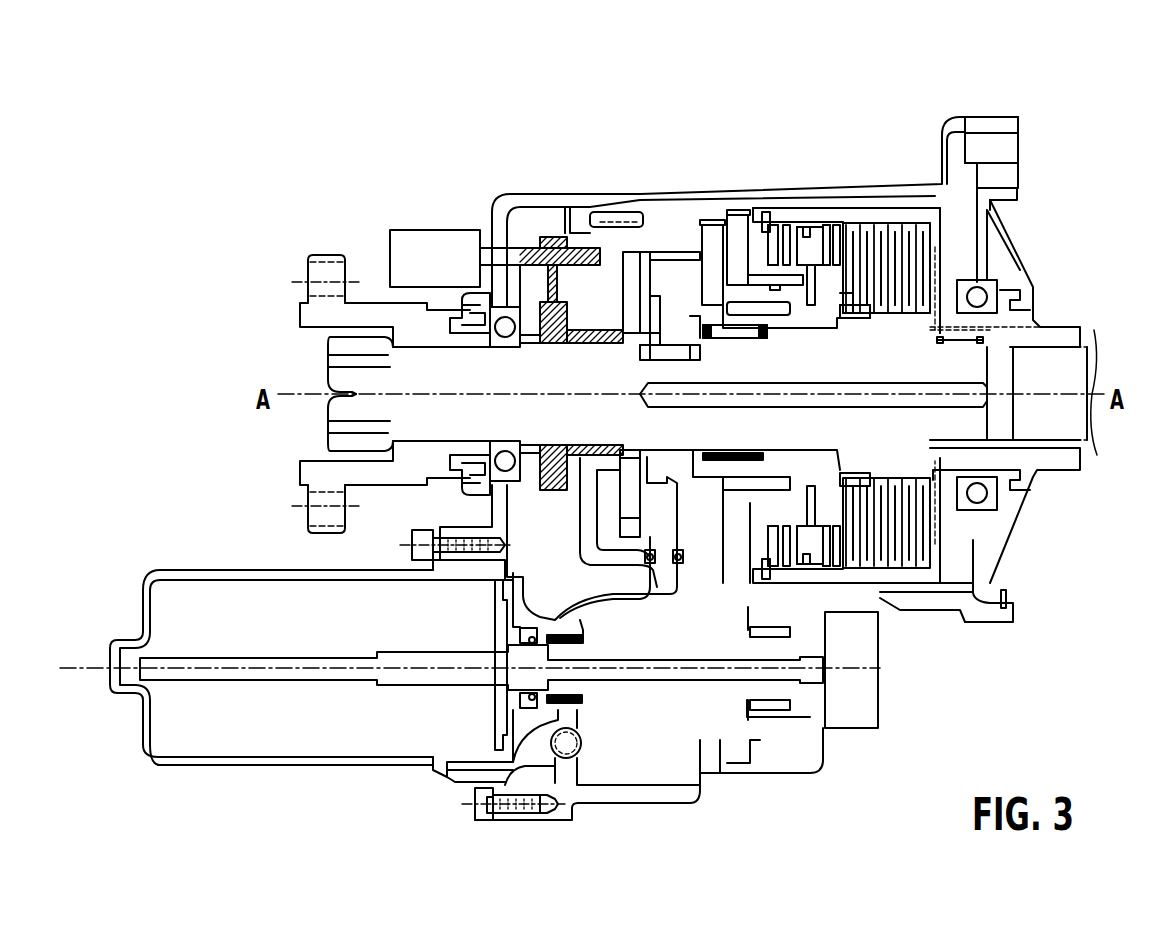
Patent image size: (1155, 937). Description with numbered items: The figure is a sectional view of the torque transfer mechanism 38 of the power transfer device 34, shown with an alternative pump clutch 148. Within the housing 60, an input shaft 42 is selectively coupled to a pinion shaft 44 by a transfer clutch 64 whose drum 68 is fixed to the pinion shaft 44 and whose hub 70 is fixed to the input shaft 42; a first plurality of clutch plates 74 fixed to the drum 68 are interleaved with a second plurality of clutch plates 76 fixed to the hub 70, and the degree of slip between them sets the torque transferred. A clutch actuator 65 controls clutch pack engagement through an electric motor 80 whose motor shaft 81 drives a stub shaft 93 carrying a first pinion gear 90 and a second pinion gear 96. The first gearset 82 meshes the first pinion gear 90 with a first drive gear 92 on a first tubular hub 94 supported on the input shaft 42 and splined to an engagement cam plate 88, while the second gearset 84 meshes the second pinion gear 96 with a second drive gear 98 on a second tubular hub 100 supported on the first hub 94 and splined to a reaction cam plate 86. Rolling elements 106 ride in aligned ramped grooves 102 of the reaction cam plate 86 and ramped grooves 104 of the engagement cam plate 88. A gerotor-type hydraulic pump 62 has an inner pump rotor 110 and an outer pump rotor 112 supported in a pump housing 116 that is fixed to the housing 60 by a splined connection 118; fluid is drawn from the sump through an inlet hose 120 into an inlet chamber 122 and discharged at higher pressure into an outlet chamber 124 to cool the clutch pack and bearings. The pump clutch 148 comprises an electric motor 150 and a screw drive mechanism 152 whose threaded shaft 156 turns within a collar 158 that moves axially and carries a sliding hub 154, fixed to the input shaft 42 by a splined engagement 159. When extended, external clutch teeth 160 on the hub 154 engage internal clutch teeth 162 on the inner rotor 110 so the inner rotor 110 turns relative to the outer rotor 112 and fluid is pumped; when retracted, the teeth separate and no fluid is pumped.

The power transfer device 34 is at (905, 78).
The torque transfer mechanism 38 is at (1003, 642).
The input shaft 42 is at (332, 374).
The pinion shaft 44 is at (1090, 360).
The housing 60 is at (942, 183).
The hydraulic pump 62 is at (670, 253).
The transfer clutch 64 is at (873, 203).
The clutch actuator 65 is at (595, 760).
The drum 68 is at (943, 230).
The hub 70 is at (917, 475).
The first plurality of clutch plates 74 is at (933, 217).
The second plurality of clutch plates 76 is at (923, 498).
The electric motor 80 is at (330, 769).
The motor shaft 81 is at (428, 660).
The first gearset 82 is at (687, 612).
The second gearset 84 is at (747, 607).
The reaction cam plate 86 is at (803, 232).
The engagement cam plate 88 is at (857, 205).
The first pinion gear 90 is at (707, 773).
The first drive gear 92 is at (712, 268).
The stub shaft 93 is at (657, 682).
The first tubular hub 94 is at (775, 325).
The second pinion gear 96 is at (740, 763).
The second drive gear 98 is at (737, 212).
The second tubular hub 100 is at (797, 300).
The ramped grooves 102 is at (803, 240).
The ramped grooves 104 is at (863, 222).
The rolling elements 106 is at (815, 230).
The inner pump rotor 110 is at (653, 300).
The outer pump rotor 112 is at (660, 240).
The pump housing 116 is at (670, 460).
The splined connection 118 is at (625, 225).
The inlet hose 120 is at (637, 602).
The inlet chamber 122 is at (650, 488).
The outlet chamber 124 is at (665, 310).
The pump clutch 148 is at (548, 232).
The electric motor 150 is at (422, 230).
The screw drive mechanism 152 is at (530, 242).
The sliding hub 154 is at (550, 345).
The threaded shaft 156 is at (597, 250).
The collar 158 is at (558, 248).
The splined engagement 159 is at (583, 345).
The external clutch teeth 160 is at (640, 255).
The internal clutch teeth 162 is at (645, 350).